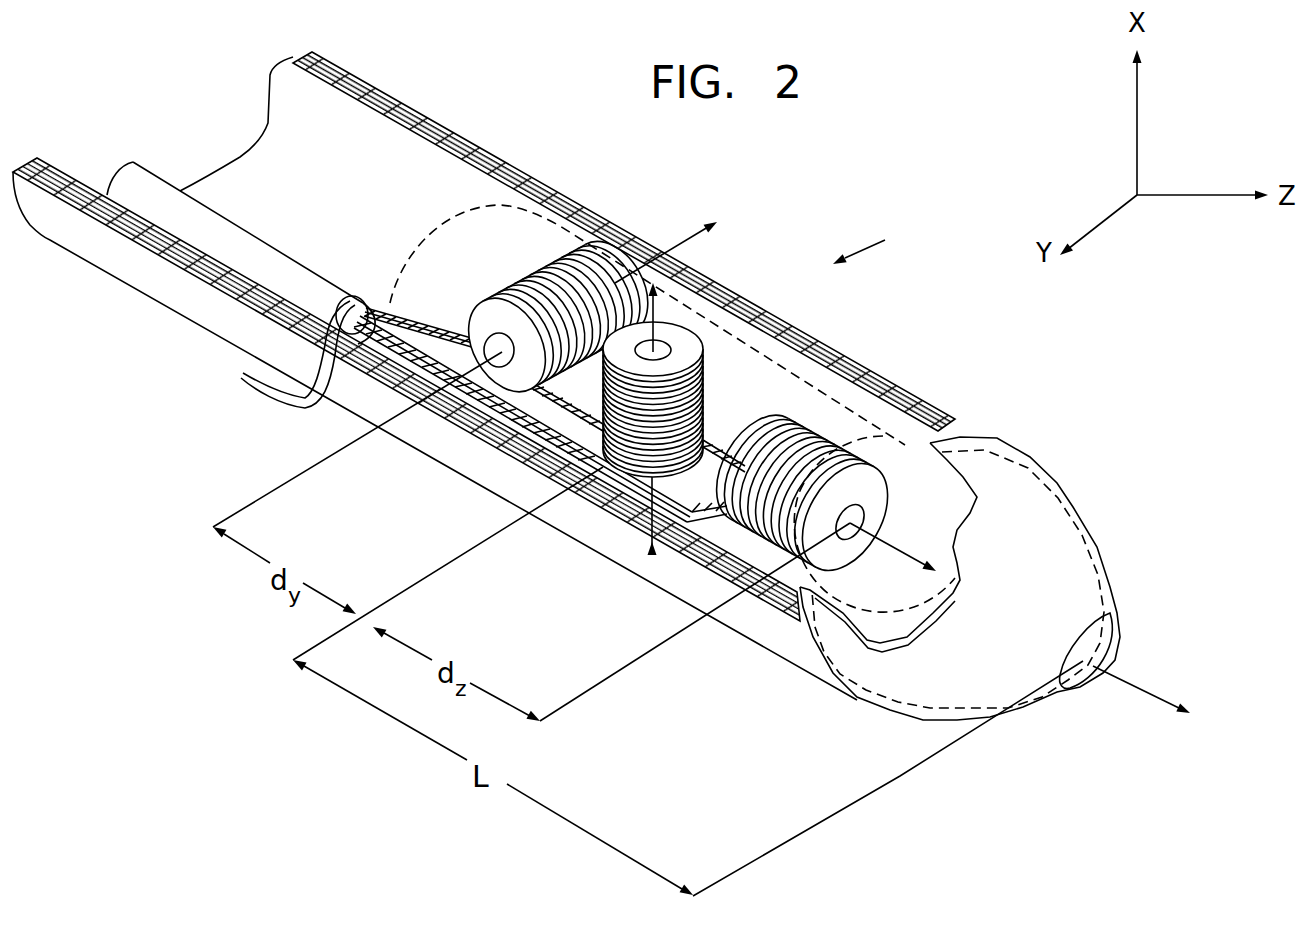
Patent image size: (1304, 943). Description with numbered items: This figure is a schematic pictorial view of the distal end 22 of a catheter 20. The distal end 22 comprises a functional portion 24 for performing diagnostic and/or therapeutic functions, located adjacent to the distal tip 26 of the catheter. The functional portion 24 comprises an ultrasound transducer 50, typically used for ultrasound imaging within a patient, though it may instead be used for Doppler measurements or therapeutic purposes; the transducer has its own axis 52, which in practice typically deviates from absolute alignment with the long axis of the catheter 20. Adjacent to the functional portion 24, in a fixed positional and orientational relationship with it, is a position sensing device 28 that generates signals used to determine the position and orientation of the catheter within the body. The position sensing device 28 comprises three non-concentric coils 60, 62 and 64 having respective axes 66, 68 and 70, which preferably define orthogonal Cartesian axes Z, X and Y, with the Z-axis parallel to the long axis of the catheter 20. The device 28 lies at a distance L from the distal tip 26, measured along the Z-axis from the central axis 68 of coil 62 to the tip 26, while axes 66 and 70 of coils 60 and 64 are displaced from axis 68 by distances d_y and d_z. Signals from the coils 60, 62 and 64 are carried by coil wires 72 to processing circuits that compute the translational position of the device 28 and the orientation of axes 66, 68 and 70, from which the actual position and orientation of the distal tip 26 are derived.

The catheter 20 is at (443, 126).
The distal end 22 is at (881, 238).
The functional portion 24 is at (858, 700).
The distal tip 26 is at (1085, 685).
The position sensing device 28 is at (408, 258).
The ultrasound transducer 50 is at (1037, 477).
The axis of ultrasound transducer 52 is at (1113, 668).
The coil 60 is at (805, 432).
The coil 62 is at (703, 386).
The coil 64 is at (488, 300).
The axis of coil 60 66 is at (890, 548).
The axis of coil 62 68 is at (655, 322).
The axis of coil 64 70 is at (260, 498).
The coil wires 72 is at (241, 378).